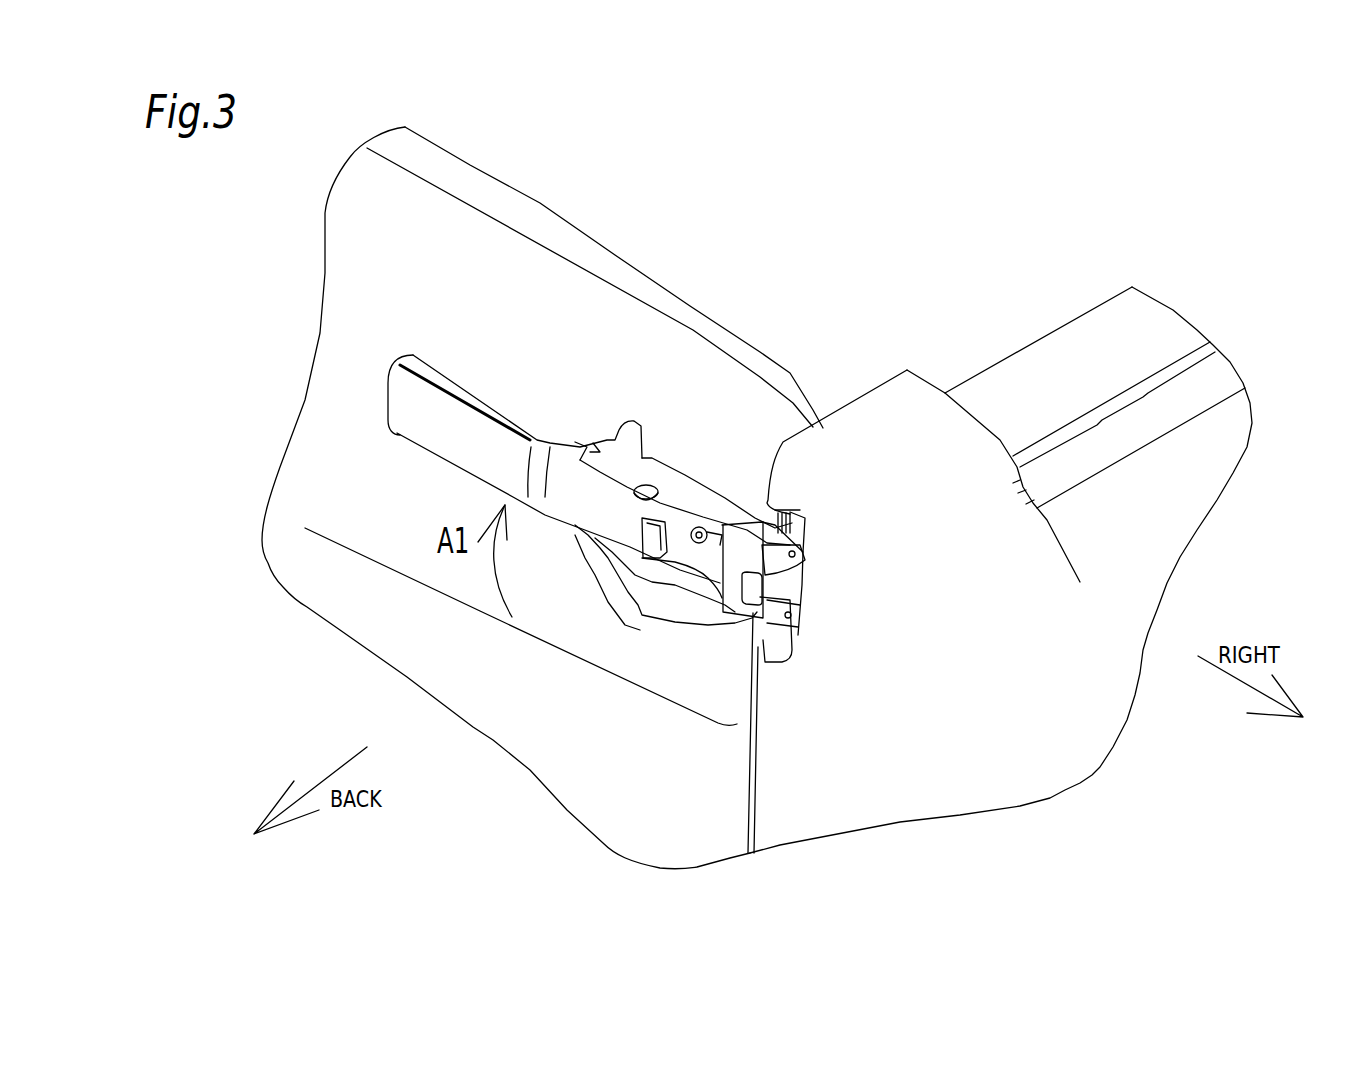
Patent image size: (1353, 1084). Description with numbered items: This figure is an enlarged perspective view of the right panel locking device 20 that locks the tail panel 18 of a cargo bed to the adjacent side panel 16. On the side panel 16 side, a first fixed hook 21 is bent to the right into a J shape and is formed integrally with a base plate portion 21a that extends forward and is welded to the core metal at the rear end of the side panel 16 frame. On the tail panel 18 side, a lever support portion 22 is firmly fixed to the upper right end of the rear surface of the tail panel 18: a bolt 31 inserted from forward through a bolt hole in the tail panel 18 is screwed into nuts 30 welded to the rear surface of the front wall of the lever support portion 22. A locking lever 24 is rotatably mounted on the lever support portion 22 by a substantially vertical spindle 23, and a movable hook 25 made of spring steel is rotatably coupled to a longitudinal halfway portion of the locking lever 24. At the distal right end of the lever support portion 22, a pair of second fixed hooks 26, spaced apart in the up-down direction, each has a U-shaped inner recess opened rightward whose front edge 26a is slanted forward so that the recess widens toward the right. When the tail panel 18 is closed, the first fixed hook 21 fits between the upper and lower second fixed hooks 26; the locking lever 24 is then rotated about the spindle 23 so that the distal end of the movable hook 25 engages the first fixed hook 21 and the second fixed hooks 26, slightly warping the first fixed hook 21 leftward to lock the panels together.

The side panel 16 is at (928, 777).
The tail panel 18 is at (343, 323).
The panel locking device 20 is at (580, 383).
The first fixed hook 21 is at (757, 593).
The base plate portion 21a is at (793, 535).
The lever support portion 22 is at (687, 492).
The spindle 23 is at (647, 486).
The locking lever 24 is at (425, 400).
The movable hook 25 is at (603, 580).
The second fixed hooks 26 is at (765, 558).
The front edge 26a is at (796, 568).
The nuts 30 is at (714, 560).
The bolt 31 is at (673, 560).